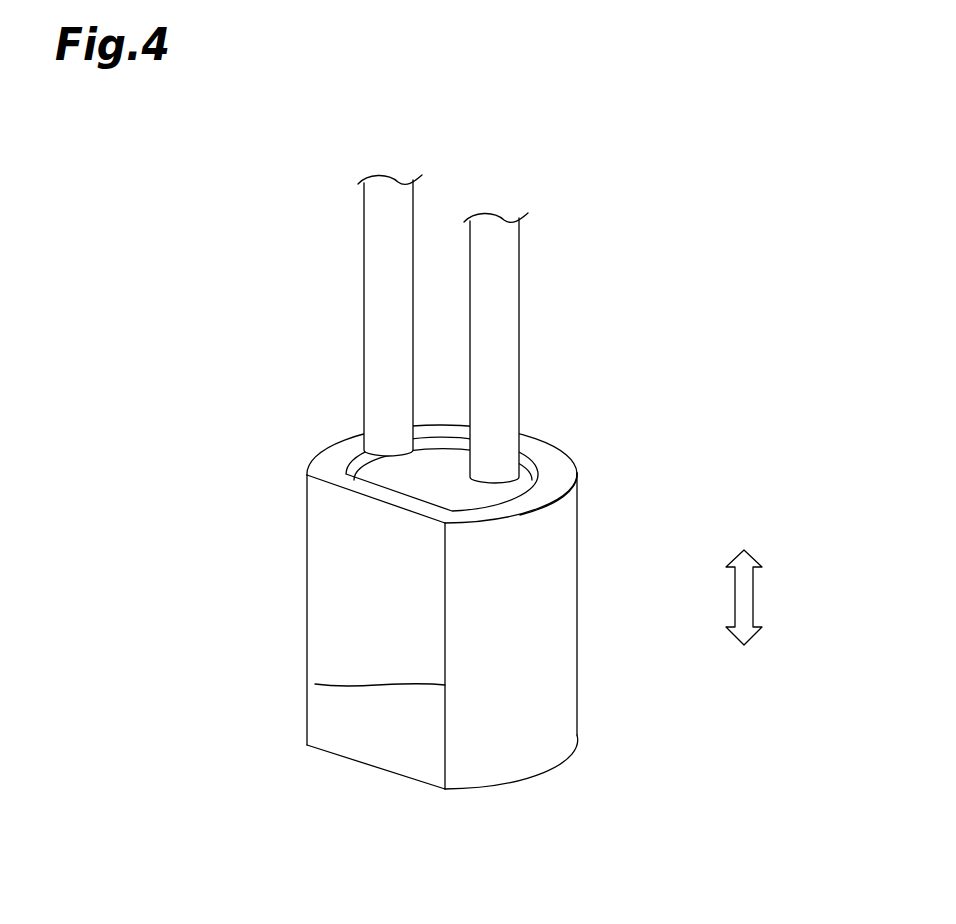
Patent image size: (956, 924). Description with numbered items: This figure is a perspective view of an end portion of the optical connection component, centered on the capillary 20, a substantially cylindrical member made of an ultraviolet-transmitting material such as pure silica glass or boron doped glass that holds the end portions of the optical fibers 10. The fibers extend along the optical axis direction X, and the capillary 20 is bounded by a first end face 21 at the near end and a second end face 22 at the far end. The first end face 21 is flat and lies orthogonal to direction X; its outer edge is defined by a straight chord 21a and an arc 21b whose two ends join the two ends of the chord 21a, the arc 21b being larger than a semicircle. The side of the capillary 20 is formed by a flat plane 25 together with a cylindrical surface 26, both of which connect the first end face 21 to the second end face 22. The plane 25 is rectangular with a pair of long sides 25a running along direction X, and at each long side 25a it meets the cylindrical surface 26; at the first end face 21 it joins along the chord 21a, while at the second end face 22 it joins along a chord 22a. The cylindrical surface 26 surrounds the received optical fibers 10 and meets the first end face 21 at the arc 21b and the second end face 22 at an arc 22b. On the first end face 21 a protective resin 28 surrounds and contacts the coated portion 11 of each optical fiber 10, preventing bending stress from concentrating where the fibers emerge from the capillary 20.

The optical fiber 10 is at (367, 329).
The coated portion 11 is at (490, 405).
The capillary 20 is at (436, 614).
The first end face 21 is at (436, 450).
The chord 21a is at (348, 493).
The arc 21b is at (548, 512).
The second end face 22 is at (436, 794).
The chord 22a is at (339, 757).
The arc 22b is at (528, 770).
The plane 25 is at (336, 573).
The long side 25a is at (315, 684).
The cylindrical surface 26 is at (565, 595).
The protective resin 28 is at (425, 463).
The direction X is at (755, 595).